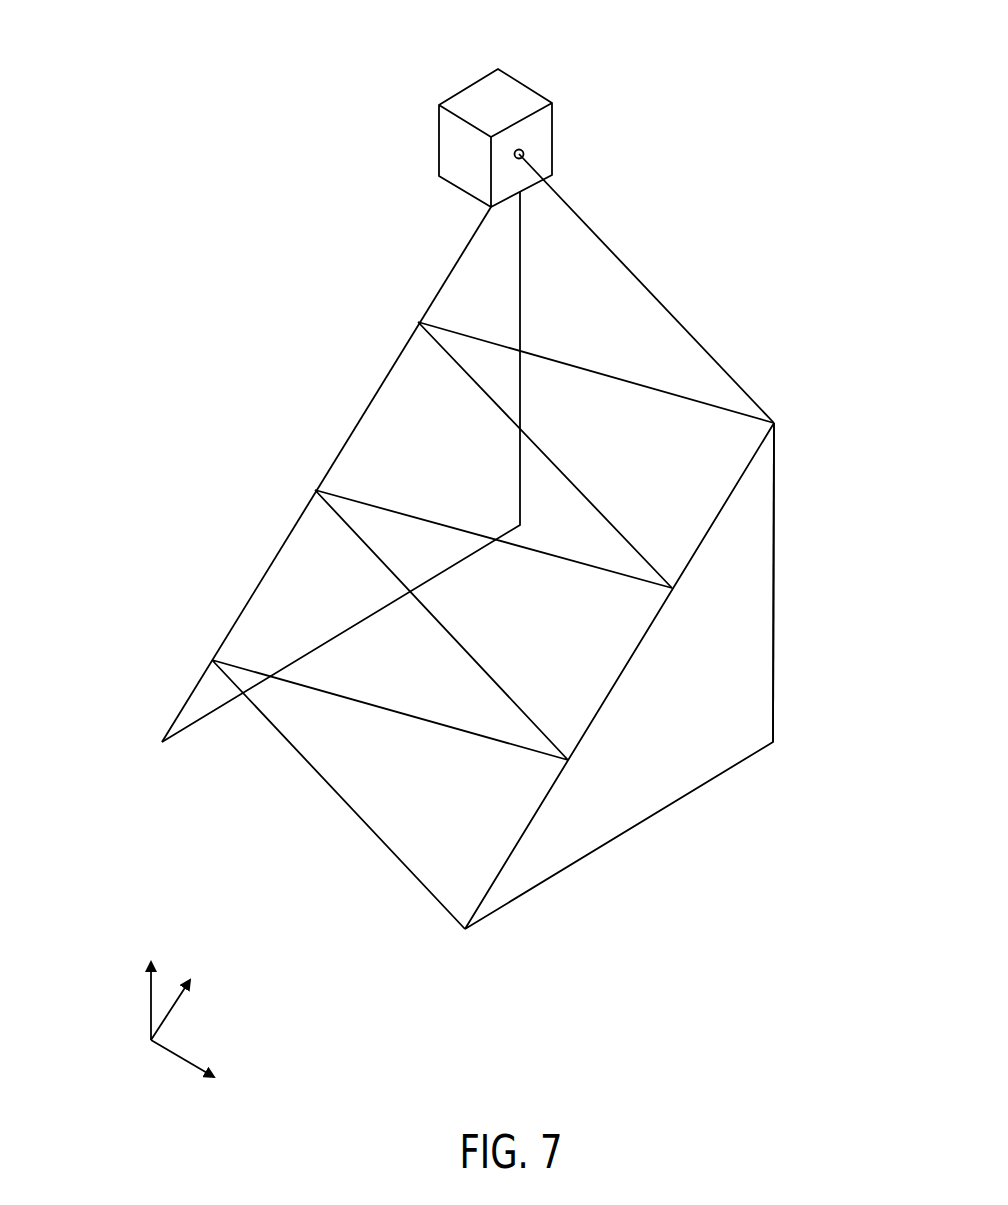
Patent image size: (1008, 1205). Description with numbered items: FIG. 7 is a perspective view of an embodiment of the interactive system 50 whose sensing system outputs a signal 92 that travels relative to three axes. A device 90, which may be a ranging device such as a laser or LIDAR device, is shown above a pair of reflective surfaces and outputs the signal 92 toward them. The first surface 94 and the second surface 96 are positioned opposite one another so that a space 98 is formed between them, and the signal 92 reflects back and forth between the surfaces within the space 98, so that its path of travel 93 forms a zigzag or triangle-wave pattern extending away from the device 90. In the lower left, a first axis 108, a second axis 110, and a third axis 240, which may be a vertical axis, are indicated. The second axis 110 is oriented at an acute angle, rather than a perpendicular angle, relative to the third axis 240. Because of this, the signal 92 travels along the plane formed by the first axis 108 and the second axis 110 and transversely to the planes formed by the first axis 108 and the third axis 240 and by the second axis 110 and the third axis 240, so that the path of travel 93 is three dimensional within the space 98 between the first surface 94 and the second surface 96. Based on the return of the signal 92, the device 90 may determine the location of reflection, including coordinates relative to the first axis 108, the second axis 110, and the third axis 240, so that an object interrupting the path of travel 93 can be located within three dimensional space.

The interactive system 50 is at (747, 140).
The device 90 is at (427, 119).
The signal 92 is at (642, 283).
The path of travel 93 is at (440, 744).
The first surface 94 is at (407, 322).
The second surface 96 is at (768, 610).
The space 98 is at (227, 738).
The first axis 108 is at (169, 1050).
The second axis 110 is at (159, 1007).
The third axis 240 is at (142, 998).